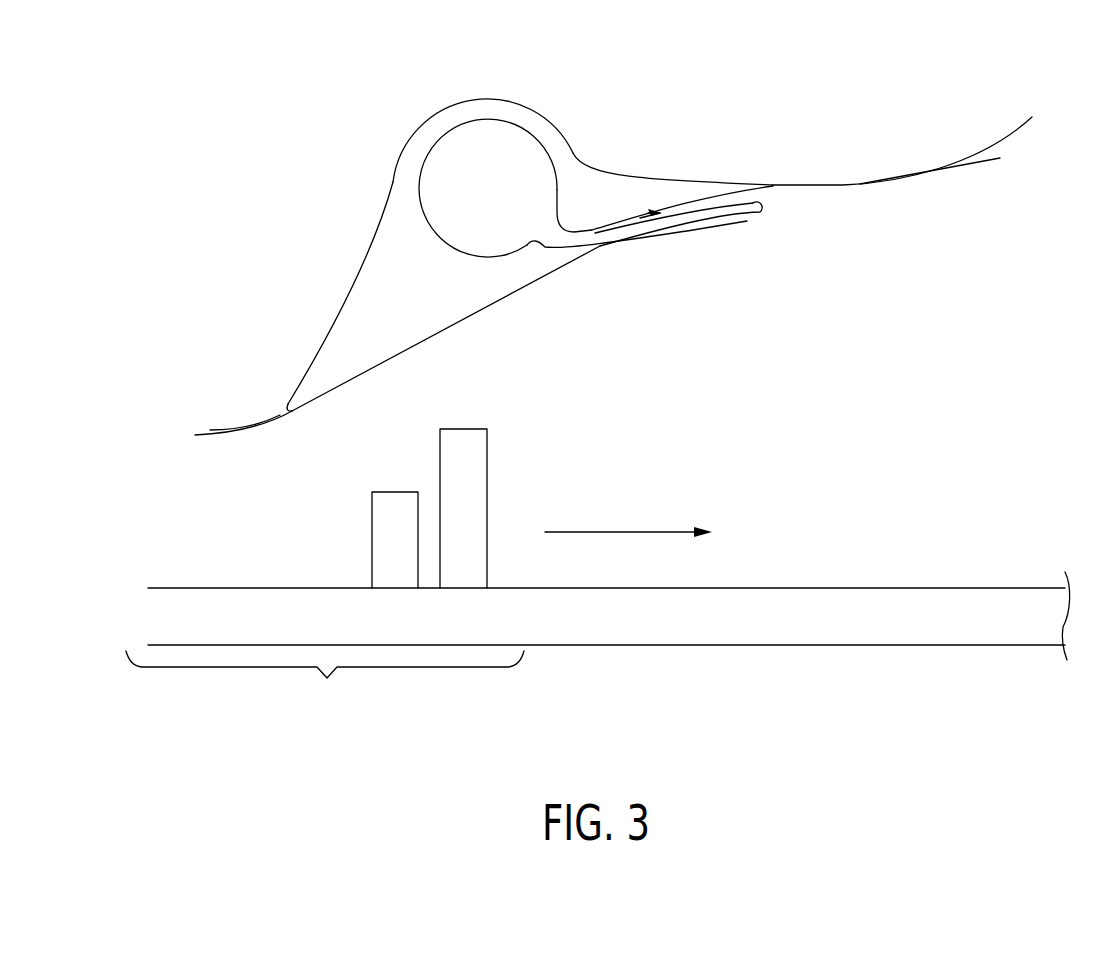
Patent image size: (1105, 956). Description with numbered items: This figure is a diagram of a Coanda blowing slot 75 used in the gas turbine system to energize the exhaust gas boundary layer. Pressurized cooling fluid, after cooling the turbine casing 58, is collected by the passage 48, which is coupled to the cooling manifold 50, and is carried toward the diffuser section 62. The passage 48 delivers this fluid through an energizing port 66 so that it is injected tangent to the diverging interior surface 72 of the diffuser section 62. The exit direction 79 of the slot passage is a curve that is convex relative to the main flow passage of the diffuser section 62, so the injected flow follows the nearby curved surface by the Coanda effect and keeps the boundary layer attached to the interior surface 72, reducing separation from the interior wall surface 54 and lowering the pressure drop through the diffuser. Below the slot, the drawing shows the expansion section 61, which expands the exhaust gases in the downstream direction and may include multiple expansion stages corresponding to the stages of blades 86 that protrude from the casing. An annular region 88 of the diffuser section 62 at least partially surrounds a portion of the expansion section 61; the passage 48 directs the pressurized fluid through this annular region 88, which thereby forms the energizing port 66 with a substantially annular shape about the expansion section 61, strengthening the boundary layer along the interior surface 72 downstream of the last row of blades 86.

The passage 48 is at (652, 130).
The cooling manifold 50 is at (392, 178).
The interior surface 54 is at (196, 436).
The turbine casing 58 is at (210, 412).
The expansion section 61 is at (325, 698).
The diffuser section 62 is at (935, 115).
The energizing port 66 is at (622, 224).
The interior surface 72 is at (1023, 127).
The Coanda blowing slot 75 is at (599, 247).
The exit direction 79 is at (577, 272).
The blades 86 is at (407, 568).
The annular region 88 is at (552, 631).